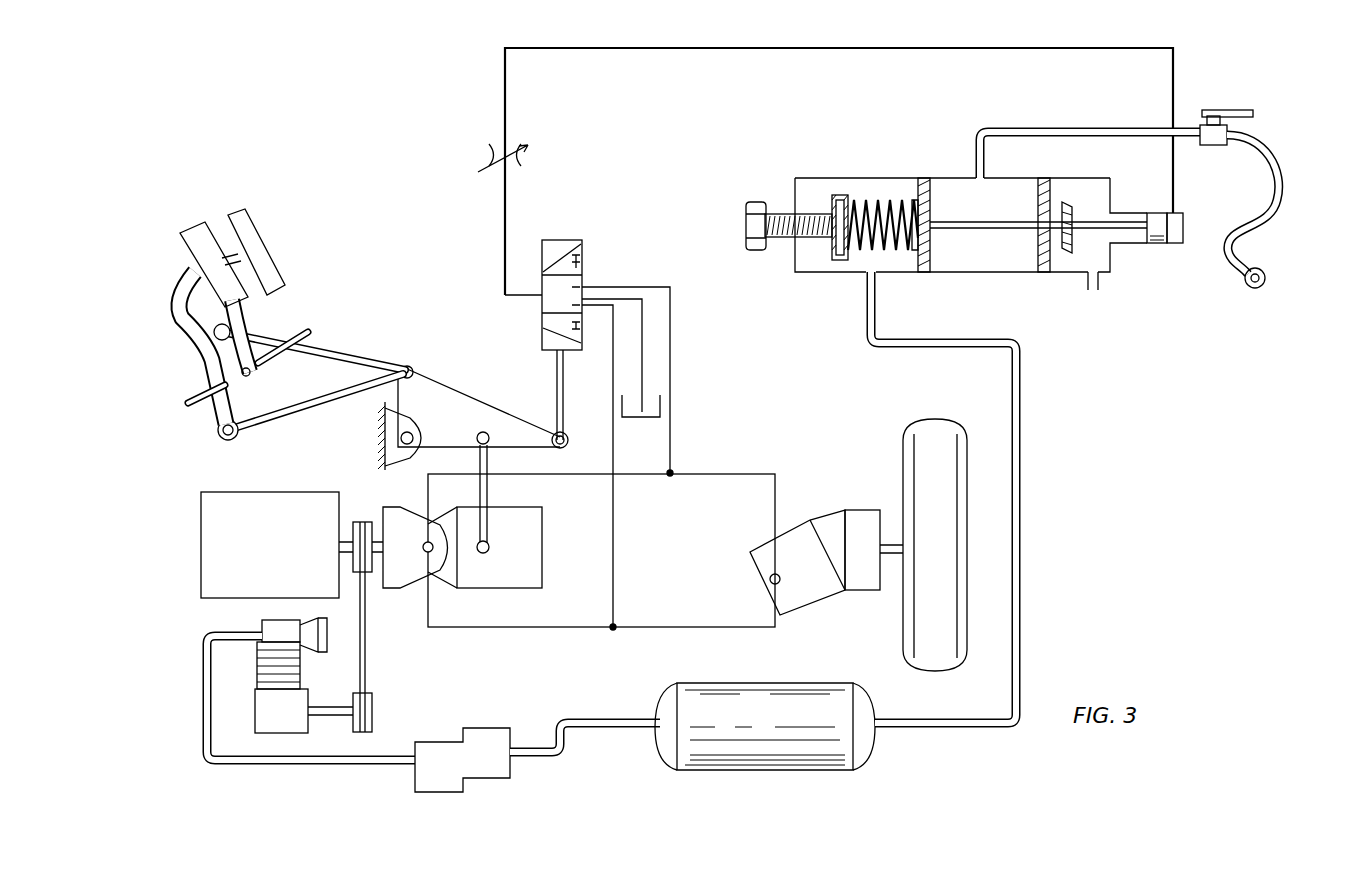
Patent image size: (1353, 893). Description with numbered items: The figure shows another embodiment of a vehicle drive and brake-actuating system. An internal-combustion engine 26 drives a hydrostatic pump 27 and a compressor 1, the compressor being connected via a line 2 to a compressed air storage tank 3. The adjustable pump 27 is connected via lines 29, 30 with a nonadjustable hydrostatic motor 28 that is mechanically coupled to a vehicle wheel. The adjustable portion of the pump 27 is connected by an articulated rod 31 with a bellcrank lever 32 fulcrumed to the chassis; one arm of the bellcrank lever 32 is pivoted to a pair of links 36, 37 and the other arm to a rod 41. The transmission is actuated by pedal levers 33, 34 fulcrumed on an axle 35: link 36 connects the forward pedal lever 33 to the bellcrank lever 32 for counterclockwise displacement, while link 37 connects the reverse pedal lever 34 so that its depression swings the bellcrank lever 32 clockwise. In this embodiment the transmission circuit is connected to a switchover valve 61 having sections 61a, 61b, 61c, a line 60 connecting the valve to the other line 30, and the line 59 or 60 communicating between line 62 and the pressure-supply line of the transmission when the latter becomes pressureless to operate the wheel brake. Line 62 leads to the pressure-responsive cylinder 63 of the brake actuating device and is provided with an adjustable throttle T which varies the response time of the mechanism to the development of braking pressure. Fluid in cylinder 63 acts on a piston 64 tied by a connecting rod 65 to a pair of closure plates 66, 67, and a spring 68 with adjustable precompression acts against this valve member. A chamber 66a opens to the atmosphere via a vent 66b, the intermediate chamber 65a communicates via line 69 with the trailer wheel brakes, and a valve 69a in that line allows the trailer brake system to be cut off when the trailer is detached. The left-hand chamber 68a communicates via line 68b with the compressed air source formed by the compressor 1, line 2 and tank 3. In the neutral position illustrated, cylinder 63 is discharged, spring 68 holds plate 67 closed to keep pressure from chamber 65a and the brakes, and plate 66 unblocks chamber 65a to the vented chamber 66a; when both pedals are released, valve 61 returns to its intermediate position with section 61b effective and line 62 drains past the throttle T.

The compressor 1 is at (256, 724).
The line 2 is at (565, 742).
The compressed air storage tank 3 is at (700, 771).
The internal-combustion engine 26 is at (200, 572).
The hydrostatic pump 27 is at (546, 552).
The hydrostatic motor 28 is at (815, 593).
The line 29 is at (722, 628).
The line 30 is at (777, 485).
The articulated rod 31 is at (490, 486).
The bellcrank lever 32 is at (437, 382).
The forward pedal lever 33 is at (222, 225).
The reverse pedal lever 34 is at (190, 292).
The axle 35 is at (186, 397).
The link 36 is at (336, 354).
The link 37 is at (296, 416).
The rod 41 is at (556, 387).
The line 59 is at (616, 508).
The line 60 is at (671, 355).
The switchover valve 61 is at (572, 272).
The valve section 61a is at (546, 322).
The intermediate valve section 61b is at (584, 284).
The valve section 61c is at (583, 250).
The line 62 is at (695, 46).
The pressure-responsive cylinder 63 is at (1181, 226).
The piston 64 is at (1153, 212).
The connecting rod 65 is at (1003, 226).
The intermediate chamber 65a is at (980, 266).
The closure plate 66 is at (1072, 205).
The chamber 66a is at (1062, 268).
The vent 66b is at (1096, 292).
The closure plate 67 is at (915, 200).
The spring 68 is at (882, 212).
The left-hand chamber 68a is at (816, 272).
The line 68b is at (1023, 432).
The line 69 is at (1264, 150).
The valve 69a is at (1206, 112).
The adjustable throttle T is at (492, 155).